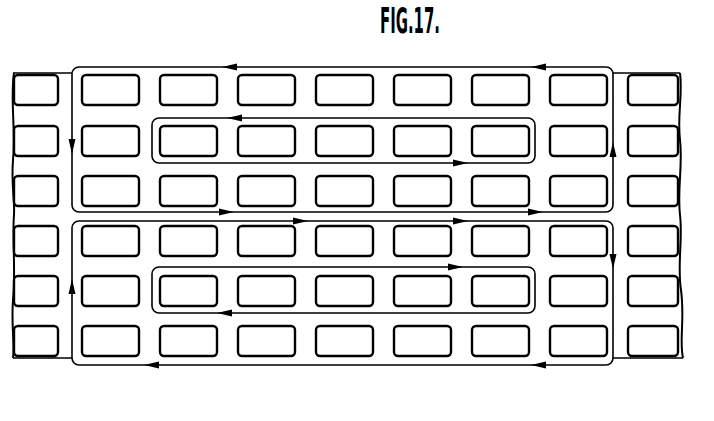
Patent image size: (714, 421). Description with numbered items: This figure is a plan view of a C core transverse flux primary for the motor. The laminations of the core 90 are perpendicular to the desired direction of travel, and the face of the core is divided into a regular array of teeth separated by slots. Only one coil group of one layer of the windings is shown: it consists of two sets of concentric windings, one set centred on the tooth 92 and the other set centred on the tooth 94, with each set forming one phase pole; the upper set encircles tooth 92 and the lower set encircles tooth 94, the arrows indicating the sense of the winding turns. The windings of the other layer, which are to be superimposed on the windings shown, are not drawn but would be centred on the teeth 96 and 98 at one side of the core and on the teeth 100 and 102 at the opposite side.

The core 90 is at (619, 88).
The tooth 92 is at (350, 143).
The tooth 94 is at (350, 295).
The tooth 96 is at (38, 140).
The tooth 98 is at (37, 287).
The tooth 100 is at (663, 138).
The tooth 102 is at (657, 293).